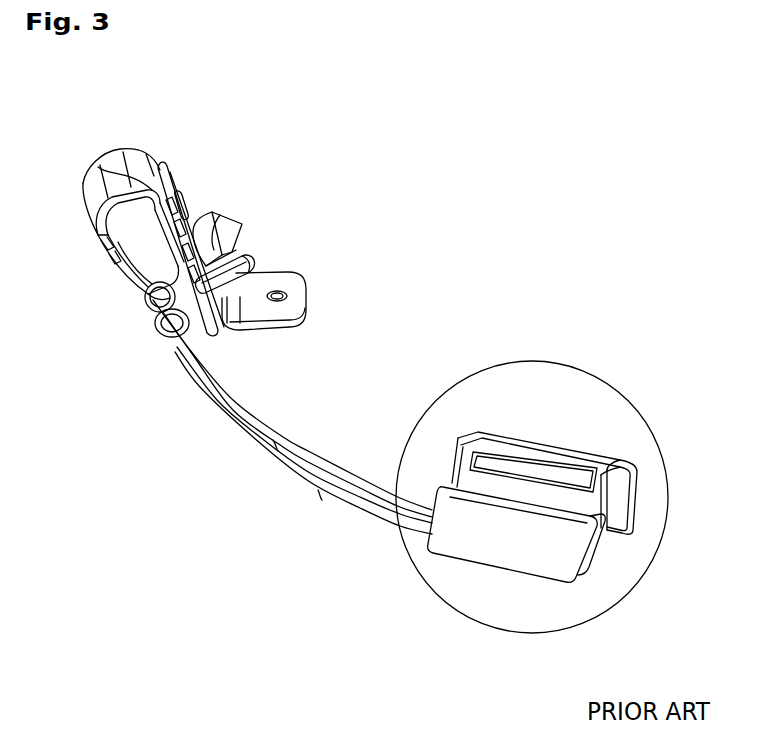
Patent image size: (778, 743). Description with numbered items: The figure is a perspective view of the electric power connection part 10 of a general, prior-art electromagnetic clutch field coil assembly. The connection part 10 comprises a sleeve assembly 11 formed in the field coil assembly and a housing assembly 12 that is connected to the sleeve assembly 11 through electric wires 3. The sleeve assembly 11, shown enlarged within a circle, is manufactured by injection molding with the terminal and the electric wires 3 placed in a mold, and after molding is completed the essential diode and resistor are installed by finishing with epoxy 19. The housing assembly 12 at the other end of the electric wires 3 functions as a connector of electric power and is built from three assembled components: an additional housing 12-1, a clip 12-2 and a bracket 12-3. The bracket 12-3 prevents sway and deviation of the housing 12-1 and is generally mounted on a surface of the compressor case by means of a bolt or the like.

The connection part 10 is at (374, 345).
The electric wires 3 is at (272, 465).
The housing assembly 12 is at (232, 200).
The housing 12-1 is at (158, 160).
The clip 12-2 is at (98, 167).
The bracket 12-3 is at (287, 273).
The sleeve assembly 11 is at (633, 407).
The epoxy 19 is at (530, 465).